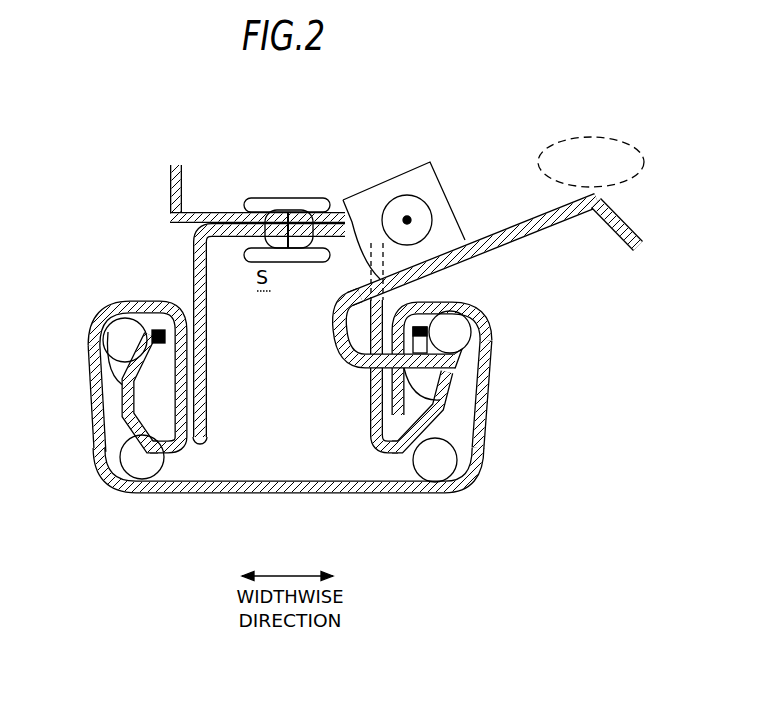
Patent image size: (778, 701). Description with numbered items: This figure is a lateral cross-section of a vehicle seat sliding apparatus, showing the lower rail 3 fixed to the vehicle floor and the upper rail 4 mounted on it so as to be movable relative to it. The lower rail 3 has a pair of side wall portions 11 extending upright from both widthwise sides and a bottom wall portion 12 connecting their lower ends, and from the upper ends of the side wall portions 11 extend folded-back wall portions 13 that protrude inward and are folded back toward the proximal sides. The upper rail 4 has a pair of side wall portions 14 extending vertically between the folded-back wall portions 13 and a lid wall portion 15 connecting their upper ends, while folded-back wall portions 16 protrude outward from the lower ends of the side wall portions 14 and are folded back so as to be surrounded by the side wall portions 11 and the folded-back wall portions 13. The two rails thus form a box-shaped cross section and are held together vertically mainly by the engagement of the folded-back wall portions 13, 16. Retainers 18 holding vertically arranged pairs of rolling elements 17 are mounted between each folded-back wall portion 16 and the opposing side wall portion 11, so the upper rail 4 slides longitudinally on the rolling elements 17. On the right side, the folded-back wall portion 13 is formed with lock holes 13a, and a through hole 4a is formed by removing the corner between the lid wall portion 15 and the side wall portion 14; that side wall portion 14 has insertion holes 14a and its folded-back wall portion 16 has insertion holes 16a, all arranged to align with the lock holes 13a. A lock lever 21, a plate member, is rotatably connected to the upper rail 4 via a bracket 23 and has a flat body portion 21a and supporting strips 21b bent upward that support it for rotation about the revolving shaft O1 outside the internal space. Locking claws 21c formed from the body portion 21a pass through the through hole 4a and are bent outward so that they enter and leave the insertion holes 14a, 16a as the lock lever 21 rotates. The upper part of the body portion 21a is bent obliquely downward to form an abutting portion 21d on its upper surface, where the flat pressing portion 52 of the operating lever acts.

The lower rail 3 is at (103, 457).
The upper rail 4 is at (197, 250).
The through hole 4a is at (297, 230).
The side wall portions 11 is at (97, 432).
The bottom wall portion 12 is at (330, 500).
The folded-back wall portions 13 is at (207, 330).
The lock holes 13a is at (370, 380).
The side wall portions 14 is at (370, 427).
The insertion holes 14a is at (355, 350).
The lid wall portion 15 is at (266, 212).
The folded-back wall portions 16 is at (100, 370).
The insertion holes 16a is at (428, 305).
The rolling elements 17 is at (122, 332).
The retainers 18 is at (118, 400).
The lock lever 21 is at (477, 238).
The body portion 21a is at (523, 215).
The supporting strips 21b is at (442, 192).
The locking claws 21c is at (458, 425).
The abutting portion 21d is at (590, 188).
The bracket 23 is at (214, 212).
The pressing portion 52 is at (586, 137).
The revolving shaft O1 is at (407, 220).